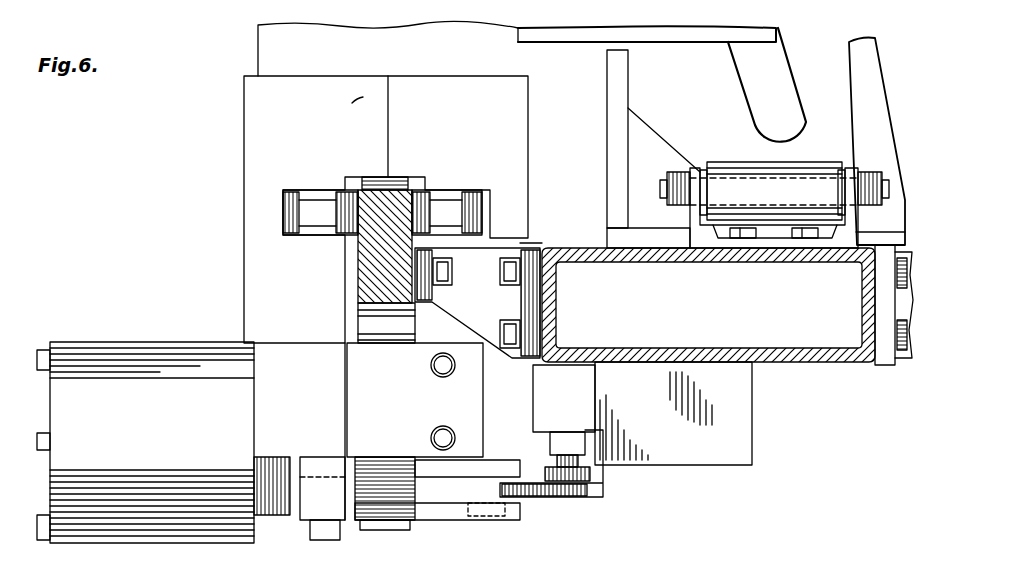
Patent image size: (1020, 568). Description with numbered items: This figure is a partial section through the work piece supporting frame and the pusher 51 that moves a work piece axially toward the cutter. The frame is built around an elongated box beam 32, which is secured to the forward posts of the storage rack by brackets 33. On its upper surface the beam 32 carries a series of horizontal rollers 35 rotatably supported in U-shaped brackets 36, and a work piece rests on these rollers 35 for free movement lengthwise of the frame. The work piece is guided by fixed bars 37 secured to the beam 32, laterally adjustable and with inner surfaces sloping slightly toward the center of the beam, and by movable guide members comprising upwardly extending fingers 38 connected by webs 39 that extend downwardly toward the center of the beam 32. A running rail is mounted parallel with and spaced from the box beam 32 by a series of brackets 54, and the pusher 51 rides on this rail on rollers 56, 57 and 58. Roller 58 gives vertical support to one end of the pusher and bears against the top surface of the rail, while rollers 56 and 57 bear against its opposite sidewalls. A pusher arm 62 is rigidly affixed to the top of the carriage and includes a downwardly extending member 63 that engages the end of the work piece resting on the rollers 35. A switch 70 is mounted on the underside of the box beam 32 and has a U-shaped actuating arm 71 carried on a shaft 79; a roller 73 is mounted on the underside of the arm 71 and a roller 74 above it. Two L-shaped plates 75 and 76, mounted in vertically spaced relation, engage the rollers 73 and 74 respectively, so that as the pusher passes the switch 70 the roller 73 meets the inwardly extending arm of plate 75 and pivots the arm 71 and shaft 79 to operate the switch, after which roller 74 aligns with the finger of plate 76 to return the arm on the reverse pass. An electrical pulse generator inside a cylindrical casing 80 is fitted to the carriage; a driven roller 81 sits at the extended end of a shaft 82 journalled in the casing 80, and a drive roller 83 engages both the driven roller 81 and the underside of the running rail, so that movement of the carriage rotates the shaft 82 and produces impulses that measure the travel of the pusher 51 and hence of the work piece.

The box beam 32 is at (798, 362).
The brackets 33 is at (887, 362).
The horizontal rollers 35 is at (728, 162).
The U-shaped brackets 36 is at (704, 240).
The bars 37 is at (862, 112).
The fingers 38 is at (628, 92).
The webs 39 is at (650, 138).
The pusher 51 is at (226, 221).
The brackets 54 is at (488, 304).
The roller 56 is at (303, 190).
The roller 57 is at (483, 202).
The roller 58 is at (400, 178).
The pusher arm 62 is at (572, 42).
The downwardly extending member 63 is at (790, 100).
The switch 70 is at (712, 452).
The U-shaped actuating arm 71 is at (574, 500).
The roller 73 is at (503, 520).
The roller 74 is at (590, 476).
The L-shaped plate 75 is at (450, 520).
The L-shaped plate 76 is at (484, 460).
The shaft 79 is at (555, 460).
The cylindrical casing 80 is at (120, 348).
The driven roller 81 is at (386, 522).
The shaft 82 is at (50, 436).
The drive roller 83 is at (405, 323).